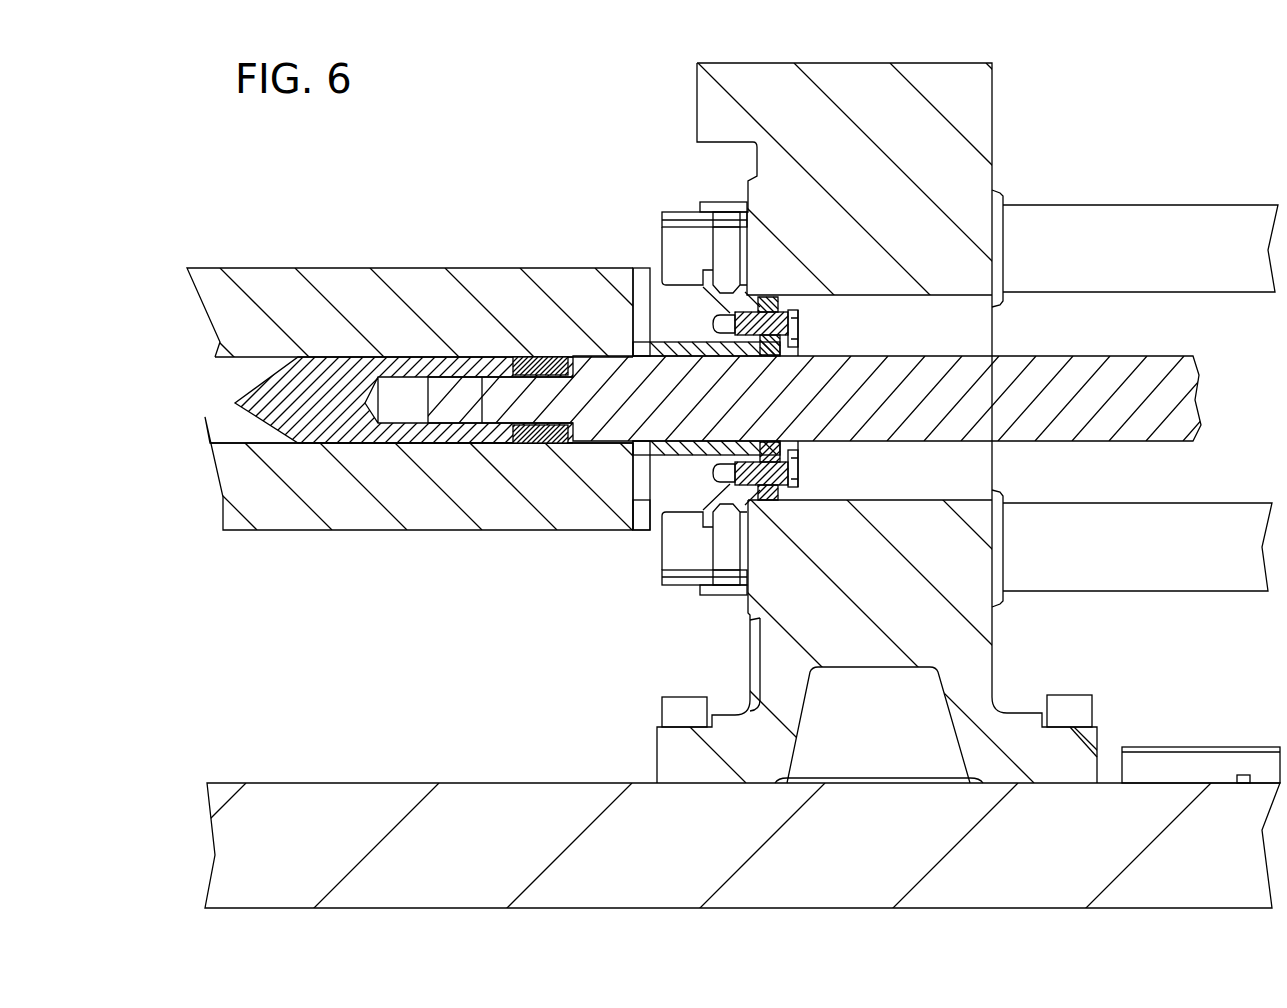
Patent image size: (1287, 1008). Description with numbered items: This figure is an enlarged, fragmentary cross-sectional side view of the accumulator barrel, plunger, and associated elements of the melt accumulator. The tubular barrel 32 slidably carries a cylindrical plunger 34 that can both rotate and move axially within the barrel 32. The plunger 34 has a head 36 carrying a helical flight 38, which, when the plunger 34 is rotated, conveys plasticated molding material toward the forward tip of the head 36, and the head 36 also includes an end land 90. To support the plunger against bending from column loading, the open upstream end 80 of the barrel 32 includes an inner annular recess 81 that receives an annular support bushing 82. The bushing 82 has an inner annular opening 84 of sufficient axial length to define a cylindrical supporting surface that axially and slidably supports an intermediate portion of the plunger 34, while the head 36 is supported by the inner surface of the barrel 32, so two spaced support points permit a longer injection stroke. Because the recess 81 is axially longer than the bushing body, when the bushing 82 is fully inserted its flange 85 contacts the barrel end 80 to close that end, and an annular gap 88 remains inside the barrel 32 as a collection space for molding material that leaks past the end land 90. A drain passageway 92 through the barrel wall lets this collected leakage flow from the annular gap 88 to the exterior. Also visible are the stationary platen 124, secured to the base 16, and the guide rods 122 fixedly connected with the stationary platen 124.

The base 16 is at (457, 797).
The tubular barrel 32 is at (343, 276).
The cylindrical plunger 34 is at (1085, 362).
The plunger head 36 is at (336, 378).
The helical flight 38 is at (374, 447).
The upstream end of the barrel 80 is at (743, 302).
The inner annular recess 81 is at (633, 352).
The annular support bushing 82 is at (710, 347).
The inner annular opening 84 is at (829, 357).
The bushing flange 85 is at (805, 452).
The annular gap 88 is at (641, 450).
The end land 90 is at (503, 358).
The drain passageway 92 is at (643, 523).
The guide rods 122 is at (1090, 220).
The stationary platen 124 is at (978, 108).